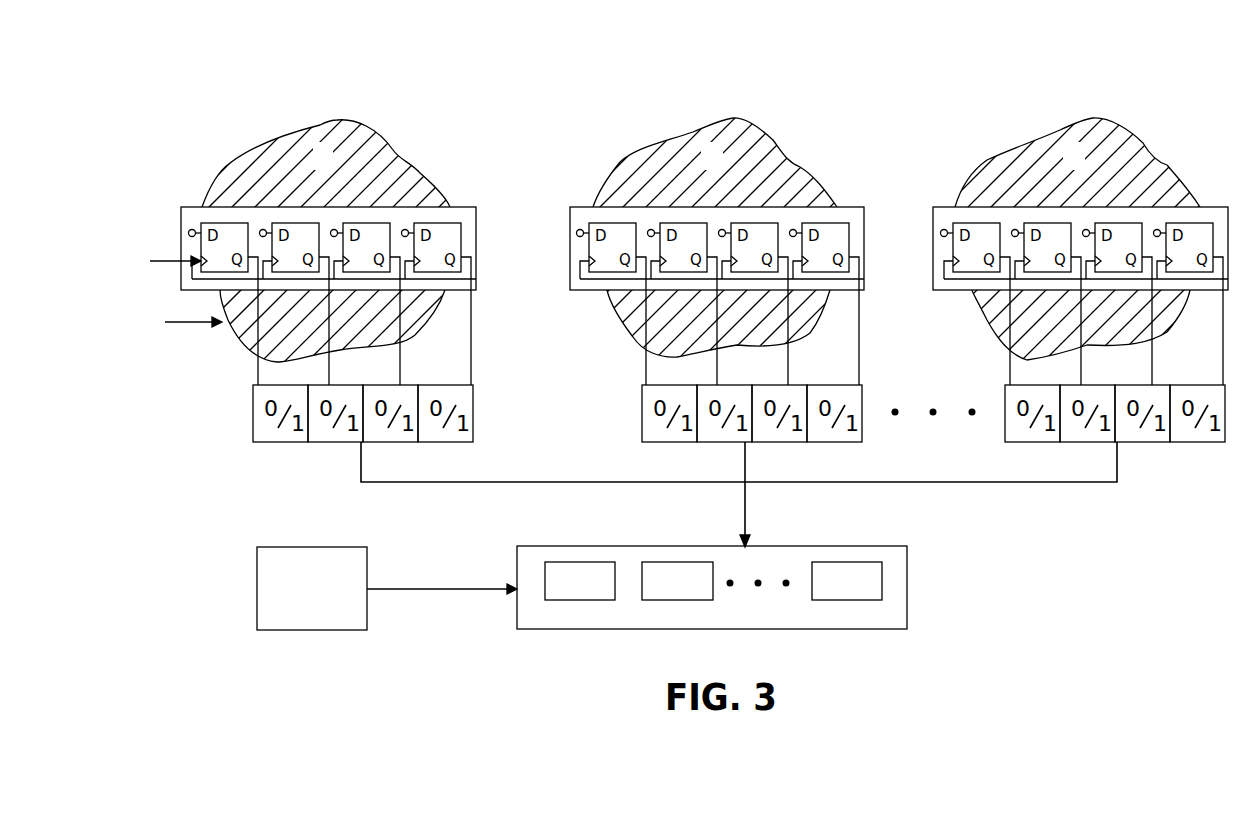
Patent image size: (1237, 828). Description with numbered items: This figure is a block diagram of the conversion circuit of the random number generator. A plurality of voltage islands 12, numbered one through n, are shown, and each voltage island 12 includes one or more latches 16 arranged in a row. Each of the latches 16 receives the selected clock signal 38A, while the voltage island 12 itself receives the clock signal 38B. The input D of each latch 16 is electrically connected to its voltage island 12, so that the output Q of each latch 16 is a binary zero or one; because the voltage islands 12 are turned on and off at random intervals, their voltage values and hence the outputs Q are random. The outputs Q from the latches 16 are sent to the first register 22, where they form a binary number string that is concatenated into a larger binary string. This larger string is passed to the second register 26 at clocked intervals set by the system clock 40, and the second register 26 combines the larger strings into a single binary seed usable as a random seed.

The voltage island 12 is at (338, 118).
The latch 16 is at (385, 222).
The first register 22 is at (474, 413).
The second register 26 is at (908, 572).
The selected clock signal 38A is at (163, 250).
The clock signal 38B is at (182, 311).
The system clock 40 is at (257, 590).